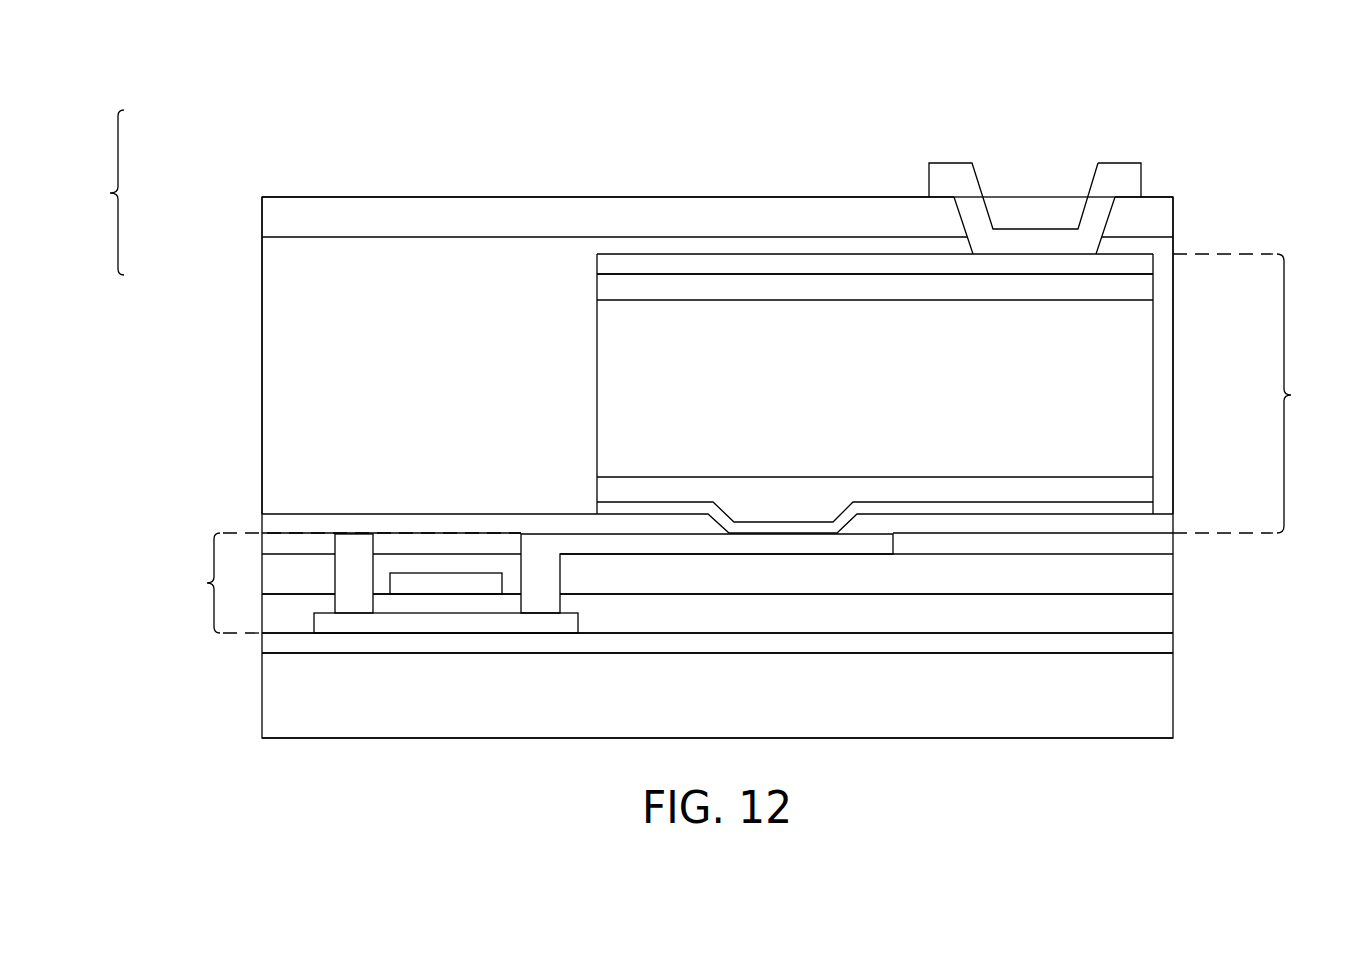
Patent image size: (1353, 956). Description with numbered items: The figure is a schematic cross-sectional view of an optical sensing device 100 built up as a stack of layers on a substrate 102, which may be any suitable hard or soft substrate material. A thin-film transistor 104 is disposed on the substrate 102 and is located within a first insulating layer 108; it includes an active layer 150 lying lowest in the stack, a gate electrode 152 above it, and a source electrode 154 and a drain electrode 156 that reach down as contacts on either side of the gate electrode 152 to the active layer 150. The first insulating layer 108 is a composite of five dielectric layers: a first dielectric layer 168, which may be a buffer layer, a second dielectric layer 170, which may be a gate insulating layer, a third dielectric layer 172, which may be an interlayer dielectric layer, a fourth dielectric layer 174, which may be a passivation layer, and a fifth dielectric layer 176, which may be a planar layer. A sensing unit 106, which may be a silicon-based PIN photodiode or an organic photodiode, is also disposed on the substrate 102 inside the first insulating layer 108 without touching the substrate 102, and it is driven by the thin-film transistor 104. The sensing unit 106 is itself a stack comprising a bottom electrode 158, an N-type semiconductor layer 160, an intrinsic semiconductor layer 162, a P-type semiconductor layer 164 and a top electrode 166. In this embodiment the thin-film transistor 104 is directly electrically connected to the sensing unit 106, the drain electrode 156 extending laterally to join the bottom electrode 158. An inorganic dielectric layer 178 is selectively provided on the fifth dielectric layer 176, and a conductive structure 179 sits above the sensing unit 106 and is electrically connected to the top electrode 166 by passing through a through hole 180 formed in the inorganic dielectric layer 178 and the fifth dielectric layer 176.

The optical sensing device 100 is at (339, 75).
The substrate 102 is at (1158, 694).
The thin-film transistor 104 is at (339, 583).
The sensing unit 106 is at (1257, 393).
The first insulating layer 108 is at (93, 192).
The active layer 150 is at (447, 625).
The gate electrode 152 is at (445, 580).
The source electrode 154 is at (352, 543).
The drain electrode 156 is at (539, 543).
The bottom electrode 158 is at (1138, 508).
The N-type semiconductor layer 160 is at (1140, 489).
The intrinsic semiconductor layer 162 is at (1138, 376).
The P-type semiconductor layer 164 is at (1138, 288).
The top electrode 166 is at (1138, 263).
The first dielectric layer 168 is at (1158, 641).
The second dielectric layer 170 is at (1158, 612).
The third dielectric layer 172 is at (1158, 573).
The fourth dielectric layer 174 is at (1158, 525).
The fifth dielectric layer 176 is at (272, 376).
The inorganic dielectric layer 178 is at (1158, 218).
The conductive structure 179 is at (1118, 172).
The through hole 180 is at (960, 214).